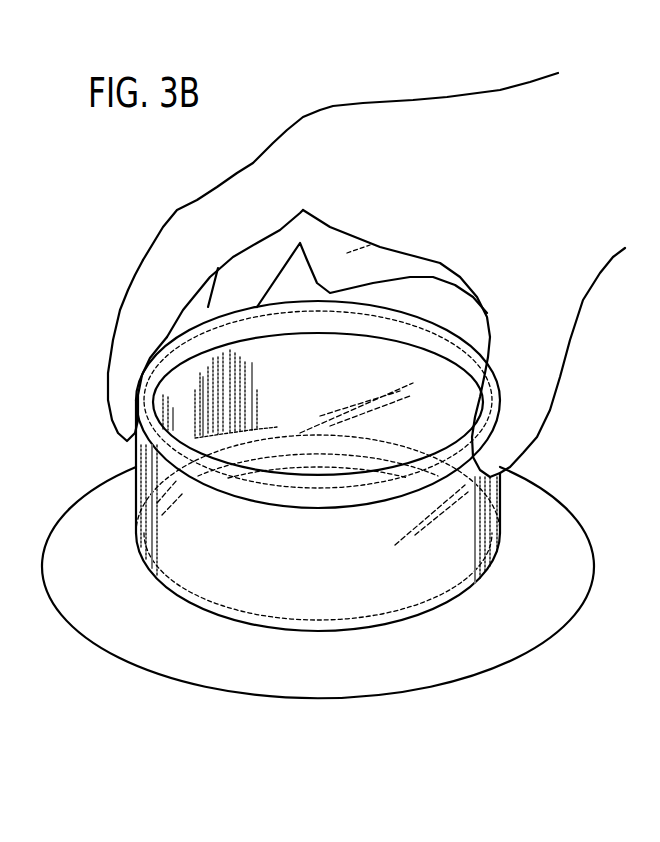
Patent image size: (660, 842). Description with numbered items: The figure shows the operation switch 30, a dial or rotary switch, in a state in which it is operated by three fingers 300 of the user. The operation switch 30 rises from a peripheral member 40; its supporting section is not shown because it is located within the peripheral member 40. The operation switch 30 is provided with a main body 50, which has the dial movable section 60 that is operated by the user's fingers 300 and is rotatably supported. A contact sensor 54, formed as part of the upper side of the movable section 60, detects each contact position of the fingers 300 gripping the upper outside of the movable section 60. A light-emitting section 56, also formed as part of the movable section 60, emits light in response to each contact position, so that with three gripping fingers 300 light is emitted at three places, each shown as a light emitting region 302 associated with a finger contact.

The operation switch 30 is at (318, 544).
The peripheral member 40 is at (490, 648).
The main body 50 is at (223, 615).
The contact sensor 54 is at (265, 492).
The light-emitting section 56 is at (203, 568).
The movable section 60 is at (405, 592).
The fingers 300 is at (233, 293).
The light emitting region 302 is at (248, 402).